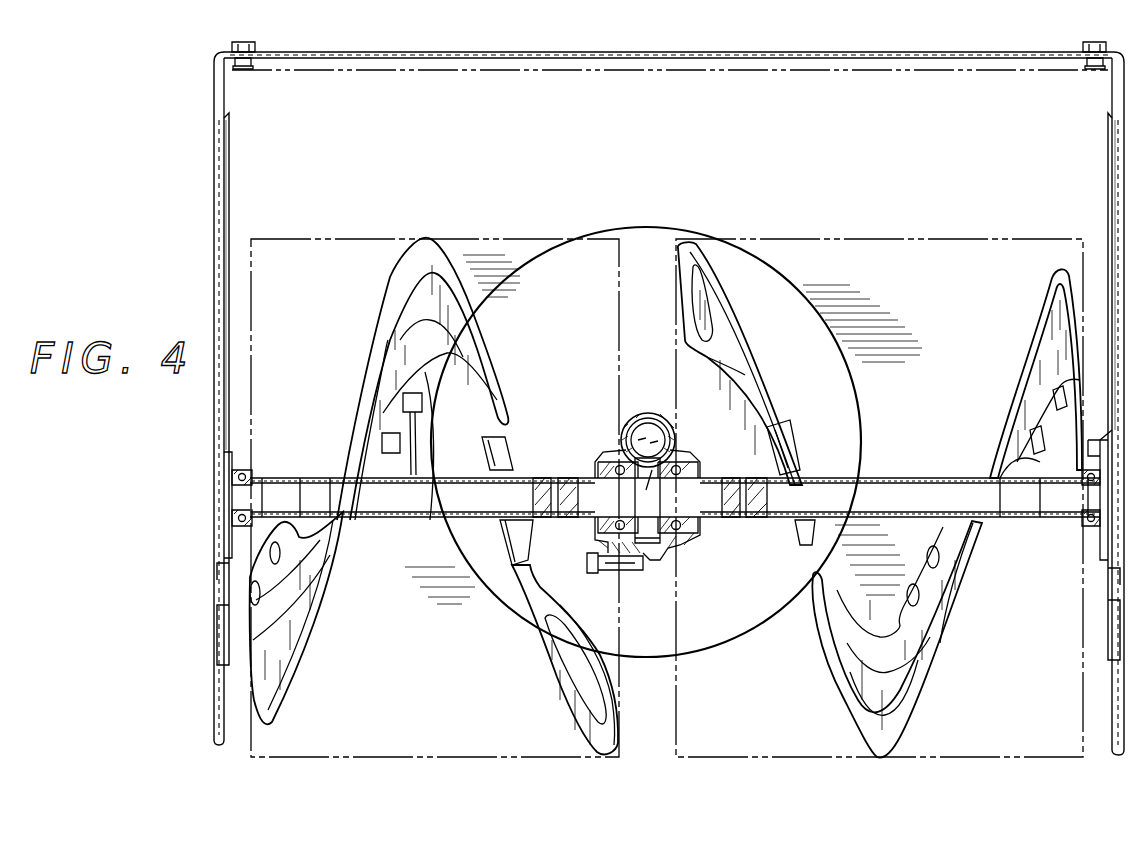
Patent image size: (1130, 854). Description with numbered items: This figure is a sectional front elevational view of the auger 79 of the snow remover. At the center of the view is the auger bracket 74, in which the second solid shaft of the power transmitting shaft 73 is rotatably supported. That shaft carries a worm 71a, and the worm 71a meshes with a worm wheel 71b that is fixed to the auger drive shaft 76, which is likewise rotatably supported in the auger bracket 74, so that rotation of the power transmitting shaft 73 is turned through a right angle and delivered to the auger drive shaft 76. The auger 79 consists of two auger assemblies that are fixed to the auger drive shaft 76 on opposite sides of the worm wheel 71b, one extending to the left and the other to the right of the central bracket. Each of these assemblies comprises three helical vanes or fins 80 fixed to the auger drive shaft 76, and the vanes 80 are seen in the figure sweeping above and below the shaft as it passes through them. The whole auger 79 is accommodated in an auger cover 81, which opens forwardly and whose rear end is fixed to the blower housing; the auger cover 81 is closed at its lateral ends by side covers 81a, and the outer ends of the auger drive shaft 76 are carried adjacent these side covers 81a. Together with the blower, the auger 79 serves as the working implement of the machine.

The worm 71a is at (664, 420).
The worm wheel 71b is at (672, 462).
The power transmitting shaft 73 is at (648, 430).
The auger bracket 74 is at (664, 545).
The auger drive shaft 76 is at (388, 518).
The auger 79 is at (912, 240).
The helical vanes 80 is at (410, 272).
The auger cover 81 is at (746, 58).
The side covers 81a is at (229, 170).